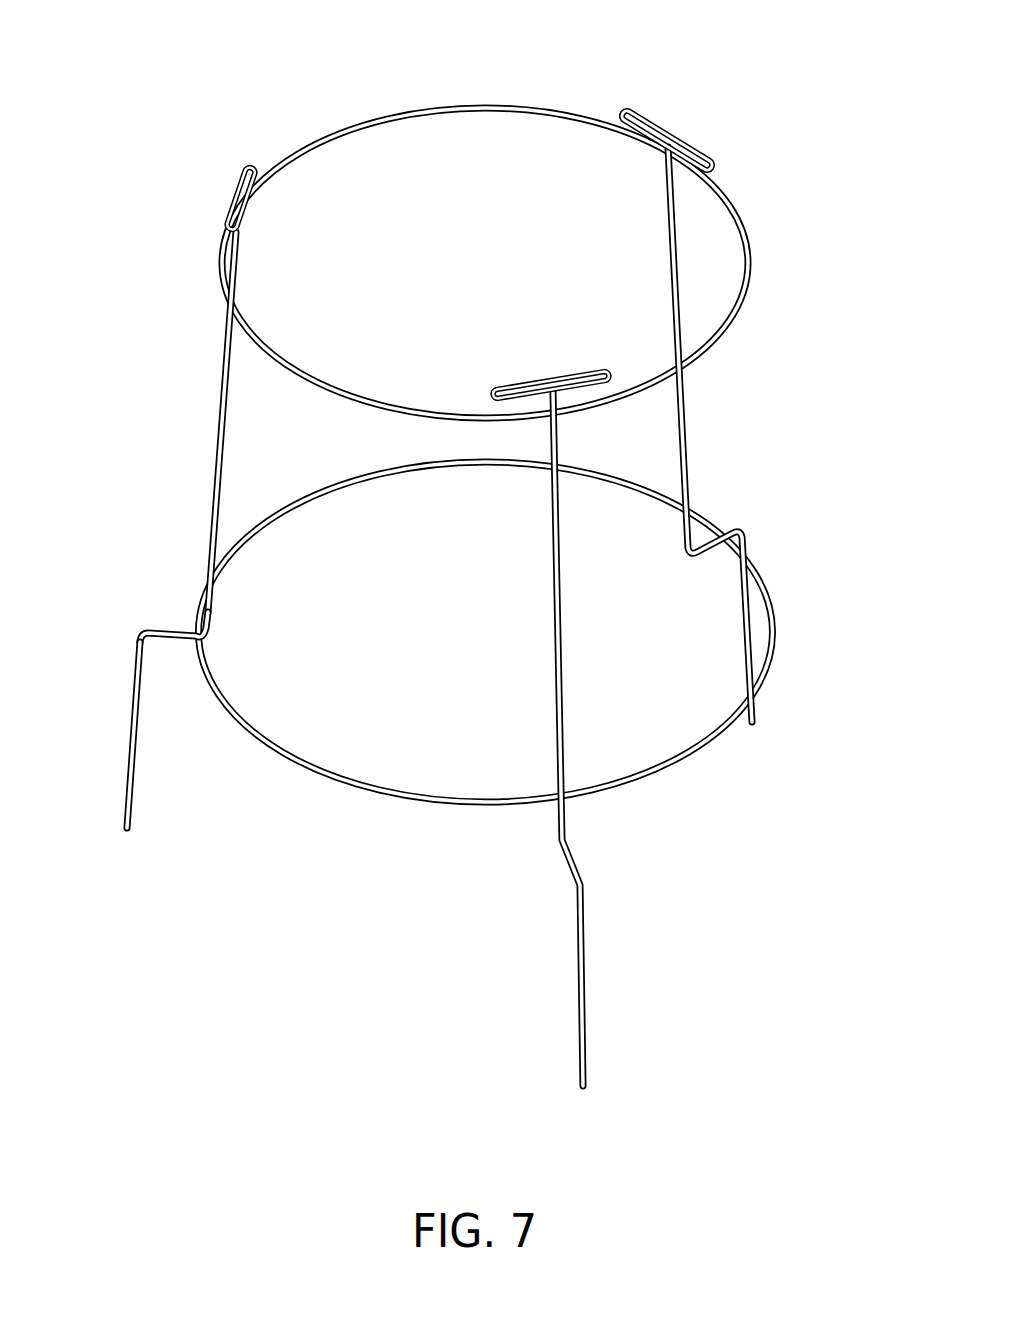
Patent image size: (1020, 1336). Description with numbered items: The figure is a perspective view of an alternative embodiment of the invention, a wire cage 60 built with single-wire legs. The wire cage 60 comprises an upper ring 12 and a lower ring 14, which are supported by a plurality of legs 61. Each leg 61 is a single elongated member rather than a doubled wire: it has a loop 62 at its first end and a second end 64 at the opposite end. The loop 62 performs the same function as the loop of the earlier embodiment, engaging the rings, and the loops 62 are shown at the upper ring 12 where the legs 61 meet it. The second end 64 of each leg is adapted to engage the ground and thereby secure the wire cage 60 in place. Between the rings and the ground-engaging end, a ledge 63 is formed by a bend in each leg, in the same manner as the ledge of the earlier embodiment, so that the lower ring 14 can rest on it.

The wire cage 60 is at (422, 569).
The upper ring 12 is at (325, 375).
The lower ring 14 is at (293, 765).
The leg 61 is at (222, 400).
The loop 62 is at (690, 140).
The ledge 63 is at (165, 626).
The second end 64 is at (122, 830).